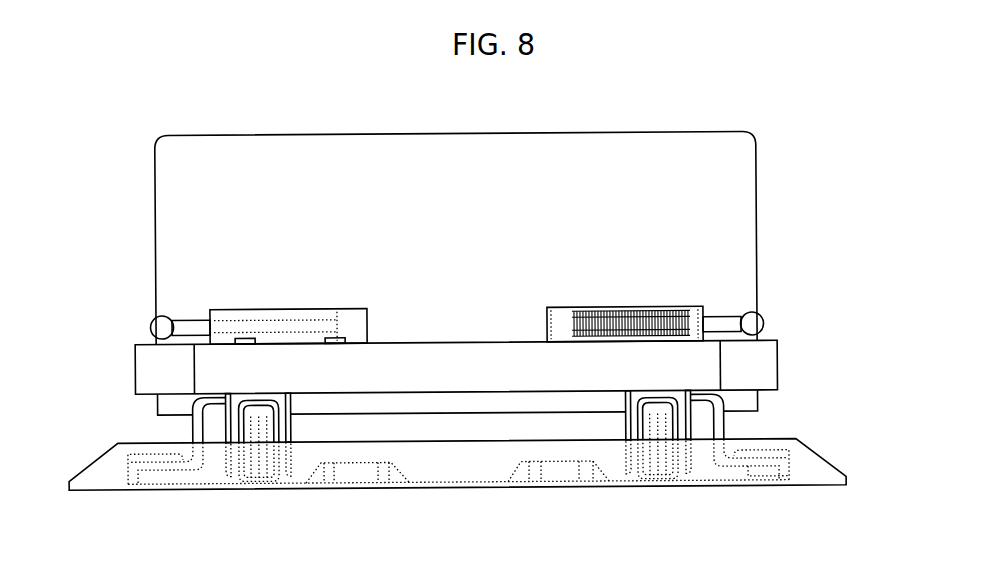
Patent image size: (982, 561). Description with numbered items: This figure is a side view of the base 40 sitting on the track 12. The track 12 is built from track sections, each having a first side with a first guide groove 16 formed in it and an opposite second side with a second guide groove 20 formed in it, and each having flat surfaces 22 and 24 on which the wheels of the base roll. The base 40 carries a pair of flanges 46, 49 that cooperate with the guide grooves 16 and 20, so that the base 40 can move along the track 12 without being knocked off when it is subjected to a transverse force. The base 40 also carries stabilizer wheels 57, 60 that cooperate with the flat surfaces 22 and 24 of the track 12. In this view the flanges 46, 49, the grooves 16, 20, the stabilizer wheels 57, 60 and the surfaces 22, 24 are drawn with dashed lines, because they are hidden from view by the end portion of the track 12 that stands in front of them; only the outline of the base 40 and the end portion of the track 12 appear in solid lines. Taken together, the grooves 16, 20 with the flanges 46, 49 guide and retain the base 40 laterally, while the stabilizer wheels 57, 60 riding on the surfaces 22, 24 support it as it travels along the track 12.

The base 40 is at (778, 126).
The track 12 is at (68, 488).
The first guide groove 16 is at (123, 453).
The second guide groove 20 is at (785, 448).
The flat surface 22 is at (195, 485).
The flat surface 24 is at (738, 480).
The flange 46 is at (138, 468).
The flange 49 is at (782, 482).
The stabilizer wheel 57 is at (248, 485).
The stabilizer wheel 60 is at (675, 480).